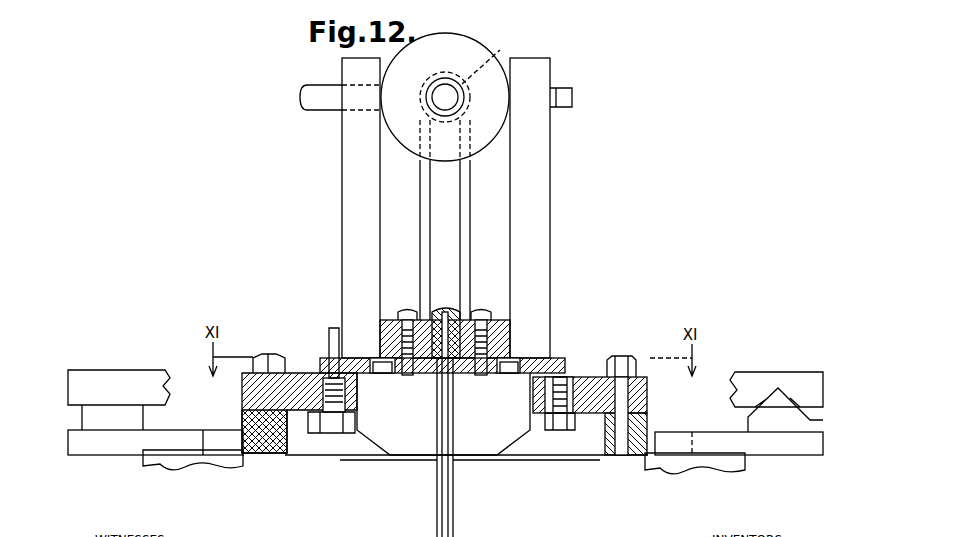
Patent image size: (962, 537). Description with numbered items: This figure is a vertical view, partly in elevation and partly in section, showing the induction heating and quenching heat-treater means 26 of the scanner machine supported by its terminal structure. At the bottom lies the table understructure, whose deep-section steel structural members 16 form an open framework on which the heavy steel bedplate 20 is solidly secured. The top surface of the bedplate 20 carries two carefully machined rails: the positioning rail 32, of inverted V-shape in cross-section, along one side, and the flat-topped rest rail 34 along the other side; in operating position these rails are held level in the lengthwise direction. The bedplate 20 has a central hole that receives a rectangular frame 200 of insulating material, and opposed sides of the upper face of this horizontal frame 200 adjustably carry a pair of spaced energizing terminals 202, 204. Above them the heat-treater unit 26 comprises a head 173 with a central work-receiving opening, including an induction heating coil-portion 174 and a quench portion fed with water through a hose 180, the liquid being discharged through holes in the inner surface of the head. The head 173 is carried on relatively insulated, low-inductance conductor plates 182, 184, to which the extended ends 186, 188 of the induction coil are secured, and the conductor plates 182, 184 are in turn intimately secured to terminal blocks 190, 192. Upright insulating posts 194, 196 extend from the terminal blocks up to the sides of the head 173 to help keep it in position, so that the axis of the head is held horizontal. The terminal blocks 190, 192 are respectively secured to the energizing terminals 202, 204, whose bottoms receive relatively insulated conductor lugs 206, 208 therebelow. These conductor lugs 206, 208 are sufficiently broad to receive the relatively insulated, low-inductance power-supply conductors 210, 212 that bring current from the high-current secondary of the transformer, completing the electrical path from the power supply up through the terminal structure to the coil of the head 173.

The steel structural members 16 is at (225, 455).
The bedplate 20 is at (88, 455).
The induction heating and quenching heat-treater means 26 is at (314, 67).
The positioning rail 32 is at (807, 423).
The rest rail 34 is at (82, 424).
The head 173 is at (425, 66).
The induction heating coil-portion 174 is at (500, 50).
The hose 180 is at (333, 103).
The conductor plate 182 is at (433, 183).
The conductor plate 184 is at (453, 190).
The extended end of the induction coil 186 is at (425, 238).
The extended end of the induction coil 188 is at (460, 240).
The terminal block 190 is at (383, 320).
The terminal block 192 is at (507, 320).
The insulating post 194 is at (345, 181).
The insulating post 196 is at (543, 190).
The rectangular frame 200 is at (242, 405).
The energizing terminal 202 is at (335, 358).
The energizing terminal 204 is at (562, 362).
The conductor lug 206 is at (408, 455).
The conductor lug 208 is at (487, 455).
The power-supply conductor 210 is at (437, 505).
The power-supply conductor 212 is at (455, 505).